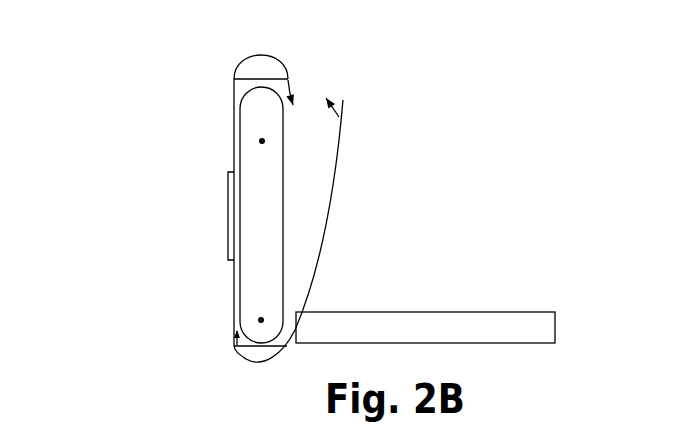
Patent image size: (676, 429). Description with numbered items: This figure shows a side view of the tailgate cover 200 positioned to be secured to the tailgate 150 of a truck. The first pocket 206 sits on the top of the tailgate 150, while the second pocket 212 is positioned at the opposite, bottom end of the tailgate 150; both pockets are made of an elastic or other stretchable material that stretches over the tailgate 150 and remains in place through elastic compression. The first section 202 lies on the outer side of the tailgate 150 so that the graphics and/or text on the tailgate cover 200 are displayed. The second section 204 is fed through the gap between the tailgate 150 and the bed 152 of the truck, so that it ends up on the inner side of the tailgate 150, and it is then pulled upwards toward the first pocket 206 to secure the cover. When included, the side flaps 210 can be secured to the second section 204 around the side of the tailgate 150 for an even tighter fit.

The tailgate cover 200 is at (128, 97).
The first section 202 is at (234, 126).
The second section 204 is at (343, 128).
The first pocket 206 is at (265, 62).
The side flaps 210 is at (228, 219).
The second pocket 212 is at (246, 360).
The tailgate 150 is at (275, 202).
The bed 152 is at (503, 317).